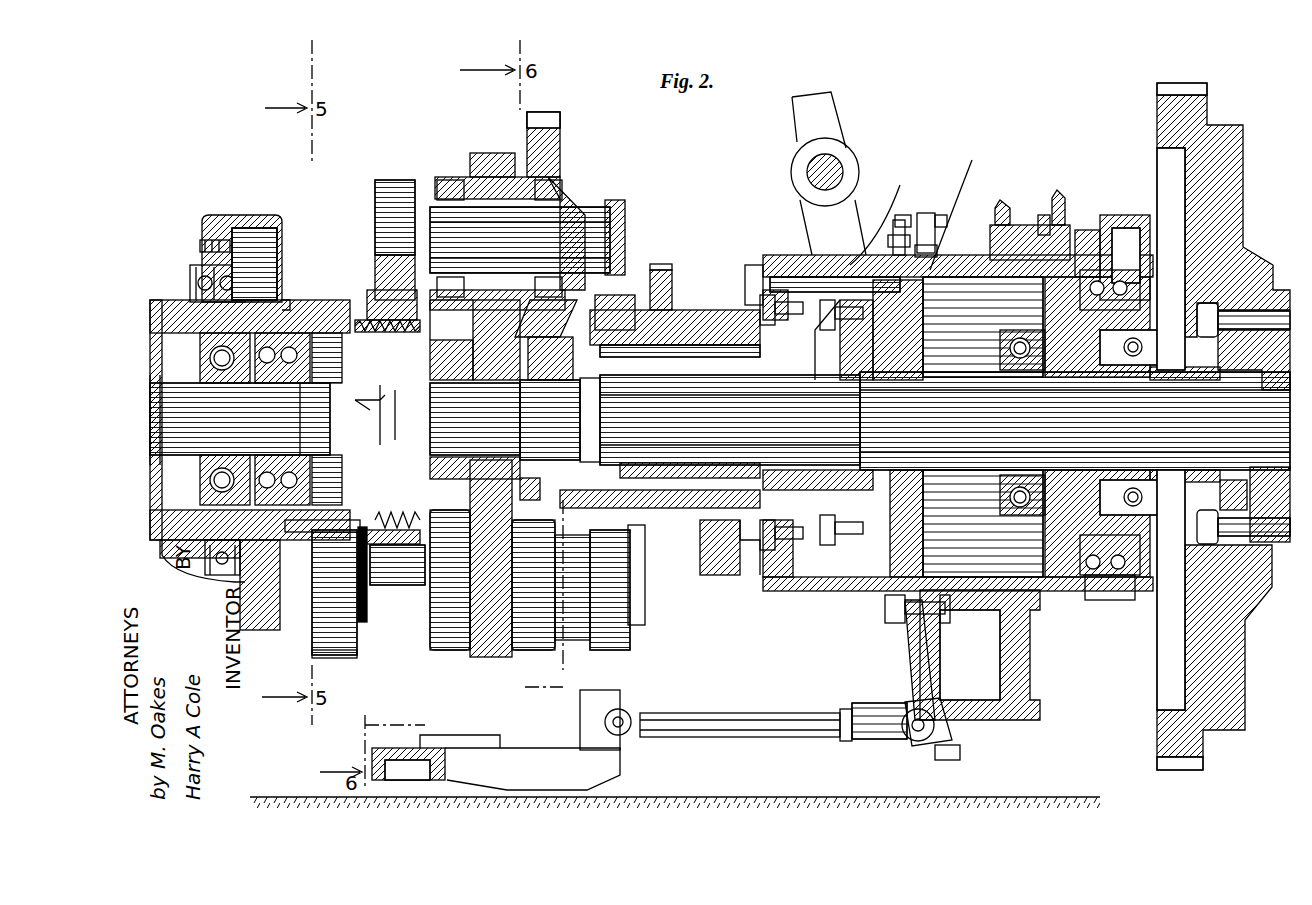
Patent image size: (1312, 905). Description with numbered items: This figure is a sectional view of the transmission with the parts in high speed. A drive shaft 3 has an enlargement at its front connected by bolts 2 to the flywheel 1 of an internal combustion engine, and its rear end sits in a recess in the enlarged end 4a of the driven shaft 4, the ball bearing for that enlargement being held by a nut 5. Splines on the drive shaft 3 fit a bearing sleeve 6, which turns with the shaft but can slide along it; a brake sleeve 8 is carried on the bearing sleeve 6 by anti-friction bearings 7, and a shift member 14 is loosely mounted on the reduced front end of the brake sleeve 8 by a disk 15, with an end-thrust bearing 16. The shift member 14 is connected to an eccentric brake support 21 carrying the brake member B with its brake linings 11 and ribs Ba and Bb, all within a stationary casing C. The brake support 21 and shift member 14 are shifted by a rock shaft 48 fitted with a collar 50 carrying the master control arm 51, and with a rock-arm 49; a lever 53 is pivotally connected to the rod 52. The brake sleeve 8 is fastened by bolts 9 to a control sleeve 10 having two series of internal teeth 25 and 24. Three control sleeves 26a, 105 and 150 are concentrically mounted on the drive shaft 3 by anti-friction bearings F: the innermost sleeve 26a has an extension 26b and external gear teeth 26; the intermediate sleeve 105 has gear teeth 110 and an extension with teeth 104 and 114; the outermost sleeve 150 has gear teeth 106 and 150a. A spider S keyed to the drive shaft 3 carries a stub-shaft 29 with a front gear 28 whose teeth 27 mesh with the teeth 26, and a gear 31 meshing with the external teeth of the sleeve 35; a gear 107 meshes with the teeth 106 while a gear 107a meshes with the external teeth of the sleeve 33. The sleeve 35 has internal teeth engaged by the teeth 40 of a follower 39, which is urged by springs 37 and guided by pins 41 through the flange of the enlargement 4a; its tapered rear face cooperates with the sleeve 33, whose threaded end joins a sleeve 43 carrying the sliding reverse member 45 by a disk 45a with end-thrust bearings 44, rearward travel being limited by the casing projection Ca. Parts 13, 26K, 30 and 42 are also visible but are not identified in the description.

The flywheel 1 is at (1220, 678).
The bolts 2 is at (1232, 530).
The drive shaft 3 is at (1205, 410).
The driven shaft 4 is at (240, 420).
The enlarged end of driven shaft 4a is at (432, 350).
The nut 5 is at (385, 405).
The bearing sleeve 6 is at (1142, 346).
The anti-friction bearings 7 is at (1005, 355).
The brake sleeve 8 is at (1085, 230).
The bolts 9 is at (438, 555).
The control sleeve 10 is at (768, 255).
The brake linings 11 is at (1057, 192).
The collar 13 is at (538, 478).
The shift member 14 is at (1128, 216).
The disk 15 is at (1110, 265).
The anti-friction end-thrust bearing 16 is at (1125, 285).
The eccentric brake support 21 is at (1000, 690).
The internal teeth 24 is at (897, 220).
The internal teeth 25 is at (750, 275).
The external gear teeth 26 is at (550, 420).
The innermost control sleeve 26a is at (730, 420).
The extension 26b is at (925, 300).
The key 26K is at (963, 201).
The gear teeth 27 is at (545, 114).
The front gear 28 is at (575, 178).
The stub-shaft 29 is at (595, 240).
The shaft end nut 30 is at (625, 206).
The gear 31 is at (378, 180).
The sleeve 33 is at (297, 532).
The sleeve 35 is at (378, 300).
The springs 37 is at (405, 530).
The follower 39 is at (345, 520).
The teeth of follower 40 is at (365, 560).
The rods 41 is at (432, 323).
The shaft 42 is at (475, 419).
The sleeve 43 is at (258, 300).
The end-thrust anti-friction bearings 44 is at (200, 282).
The member 45 is at (212, 218).
The disk 45a is at (210, 262).
The rock shaft 48 is at (833, 170).
The rock-arm 49 is at (805, 218).
The collar 50 is at (791, 176).
The arm 51 is at (833, 110).
The rod 52 is at (768, 714).
The lever 53 is at (540, 760).
The teeth 104 is at (887, 190).
The intermediate control sleeve 105 is at (690, 320).
The gear teeth 106 is at (615, 297).
The gear 107 is at (630, 640).
The gear 107a is at (355, 655).
The gear teeth 110 is at (615, 420).
The teeth 114 is at (808, 278).
The outermost control sleeve 150 is at (665, 275).
The teeth 150a is at (670, 270).
The brake member B is at (1035, 225).
The rib Ba is at (1002, 205).
The rib Bb is at (1048, 215).
The stationary casing C is at (826, 790).
The projection of casing Ca is at (205, 540).
The anti-friction bearings F is at (715, 540).
The spider S is at (485, 600).